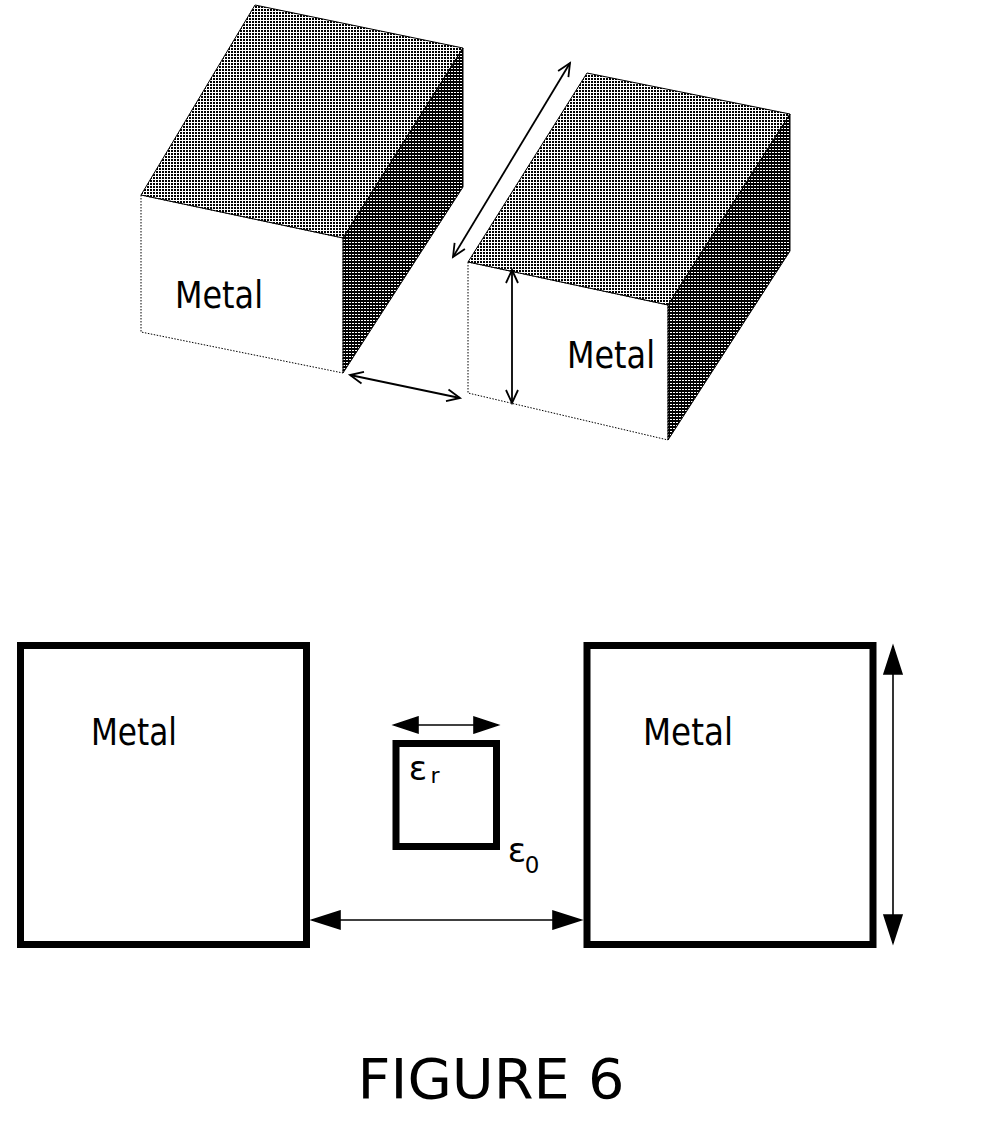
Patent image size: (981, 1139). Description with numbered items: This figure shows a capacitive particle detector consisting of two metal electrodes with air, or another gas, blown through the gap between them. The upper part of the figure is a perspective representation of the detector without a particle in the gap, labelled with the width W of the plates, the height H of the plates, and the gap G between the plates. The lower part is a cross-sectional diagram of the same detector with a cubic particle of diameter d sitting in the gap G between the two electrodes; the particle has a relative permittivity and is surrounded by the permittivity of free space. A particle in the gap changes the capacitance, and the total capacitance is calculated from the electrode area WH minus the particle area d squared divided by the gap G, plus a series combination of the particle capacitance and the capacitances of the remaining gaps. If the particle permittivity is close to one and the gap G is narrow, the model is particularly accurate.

The width of the plates W is at (511, 160).
The height of the plates H is at (711, 606).
The gap between the plates G is at (446, 674).
The particle diameter d is at (446, 762).